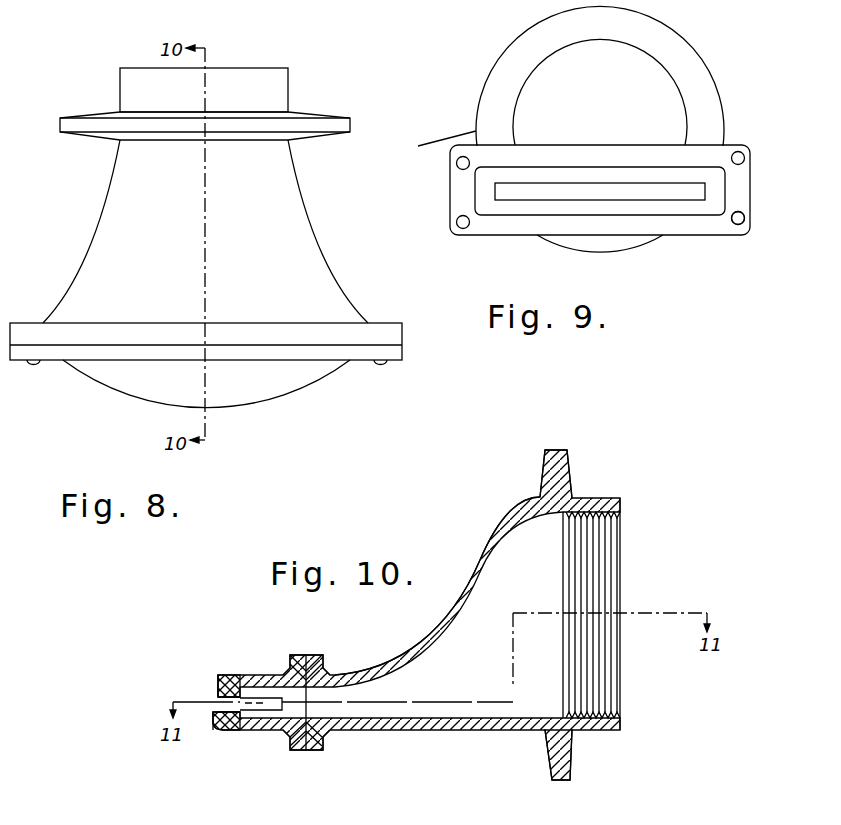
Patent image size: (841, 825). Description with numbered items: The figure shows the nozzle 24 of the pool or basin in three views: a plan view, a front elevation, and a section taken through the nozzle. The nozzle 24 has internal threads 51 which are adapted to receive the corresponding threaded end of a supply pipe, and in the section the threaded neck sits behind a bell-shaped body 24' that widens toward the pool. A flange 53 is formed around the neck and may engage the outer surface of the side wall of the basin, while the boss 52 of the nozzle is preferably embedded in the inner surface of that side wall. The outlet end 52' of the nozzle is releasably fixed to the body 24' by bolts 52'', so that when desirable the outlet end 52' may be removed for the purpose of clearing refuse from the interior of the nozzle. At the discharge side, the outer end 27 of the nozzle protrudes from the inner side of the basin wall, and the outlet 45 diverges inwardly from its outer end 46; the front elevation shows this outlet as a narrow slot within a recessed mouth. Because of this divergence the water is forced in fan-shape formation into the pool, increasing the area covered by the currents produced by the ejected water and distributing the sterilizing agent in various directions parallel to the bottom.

In FIG. 8, the nozzle 24 is at (211, 231).
In FIG. 9, the nozzle 24 is at (583, 92).
In FIG. 10, the nozzle 24 is at (416, 615).
In FIG. 8, the body 24' is at (333, 231).
In FIG. 10, the body 24' is at (437, 629).
In FIG. 10, the outer end 27 is at (218, 683).
In FIG. 9, the outlet 45 is at (688, 192).
In FIG. 10, the outlet 45 is at (217, 707).
In FIG. 9, the outer end of outlet 46 is at (505, 208).
In FIG. 10, the outer end of outlet 46 is at (230, 716).
In FIG. 8, the internal threads 51 is at (265, 56).
In FIG. 10, the internal threads 51 is at (616, 585).
In FIG. 8, the boss 52 is at (228, 330).
In FIG. 9, the boss 52 is at (616, 197).
In FIG. 10, the boss 52 is at (306, 682).
In FIG. 8, the outlet end 52' is at (210, 384).
In FIG. 10, the outlet end 52' is at (234, 682).
In FIG. 8, the bolts 52'' is at (228, 375).
In FIG. 9, the bolts 52'' is at (746, 240).
In FIG. 8, the flange 53 is at (351, 123).
In FIG. 9, the flange 53 is at (687, 43).
In FIG. 10, the flange 53 is at (560, 450).